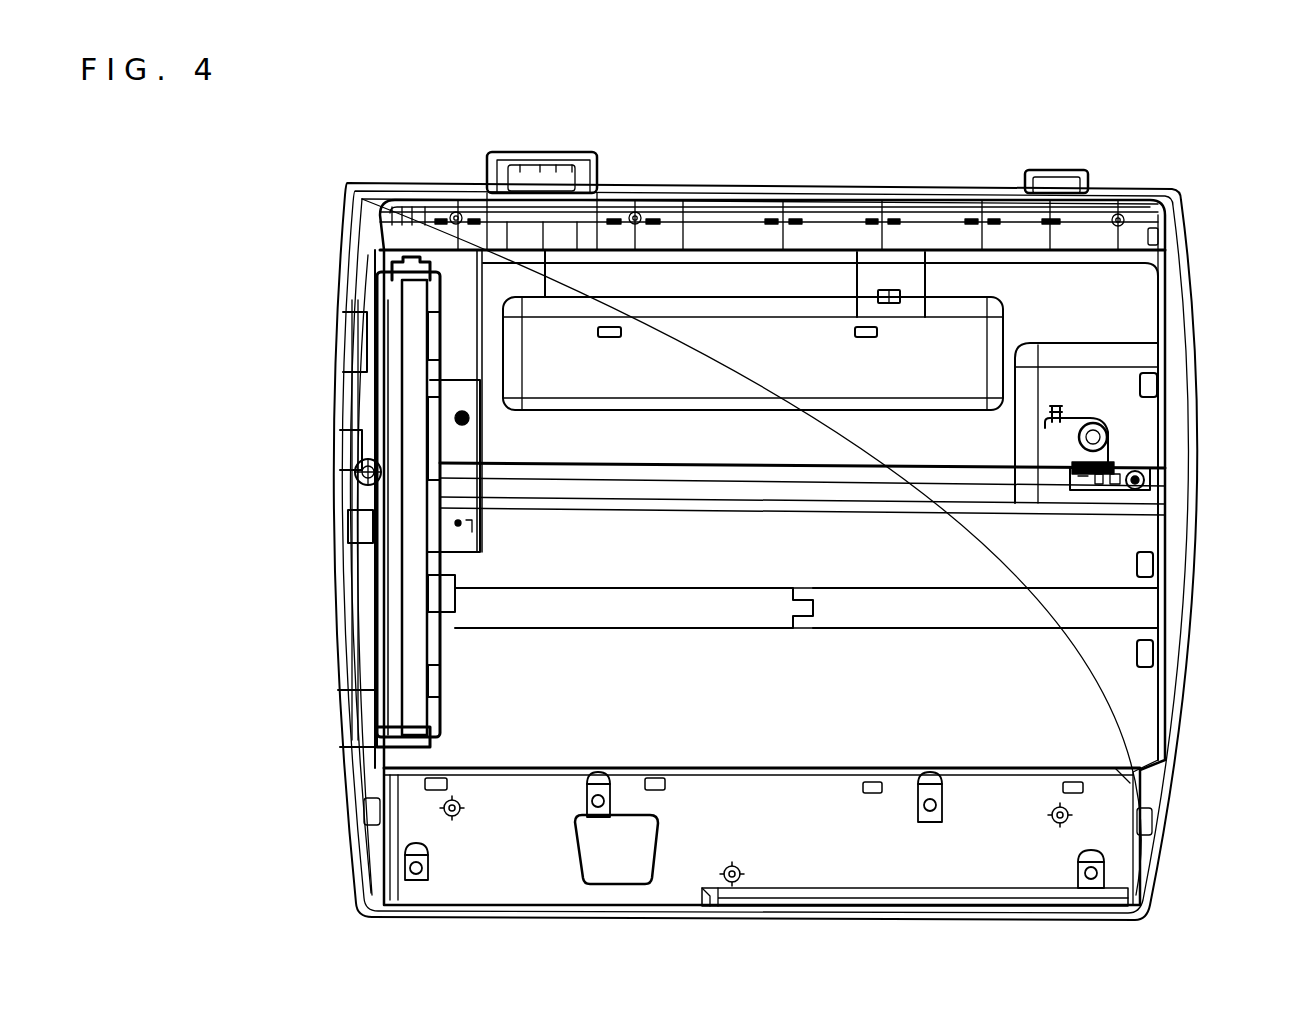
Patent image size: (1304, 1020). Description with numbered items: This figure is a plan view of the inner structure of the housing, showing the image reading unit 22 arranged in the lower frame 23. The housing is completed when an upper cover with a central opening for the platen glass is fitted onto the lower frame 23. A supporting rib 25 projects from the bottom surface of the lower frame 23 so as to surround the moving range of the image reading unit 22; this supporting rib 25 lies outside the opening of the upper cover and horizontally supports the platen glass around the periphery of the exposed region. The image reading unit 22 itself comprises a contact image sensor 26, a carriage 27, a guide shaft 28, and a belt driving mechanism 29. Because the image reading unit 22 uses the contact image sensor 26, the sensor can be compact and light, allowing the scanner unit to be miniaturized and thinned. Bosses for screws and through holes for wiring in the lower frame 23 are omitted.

The image reading unit 22 is at (447, 450).
The lower frame 23 is at (345, 830).
The supporting rib 25 is at (1160, 542).
The contact image sensor 26 is at (418, 556).
The carriage 27 is at (440, 688).
The guide shaft 28 is at (712, 506).
The belt driving mechanism 29 is at (1128, 435).